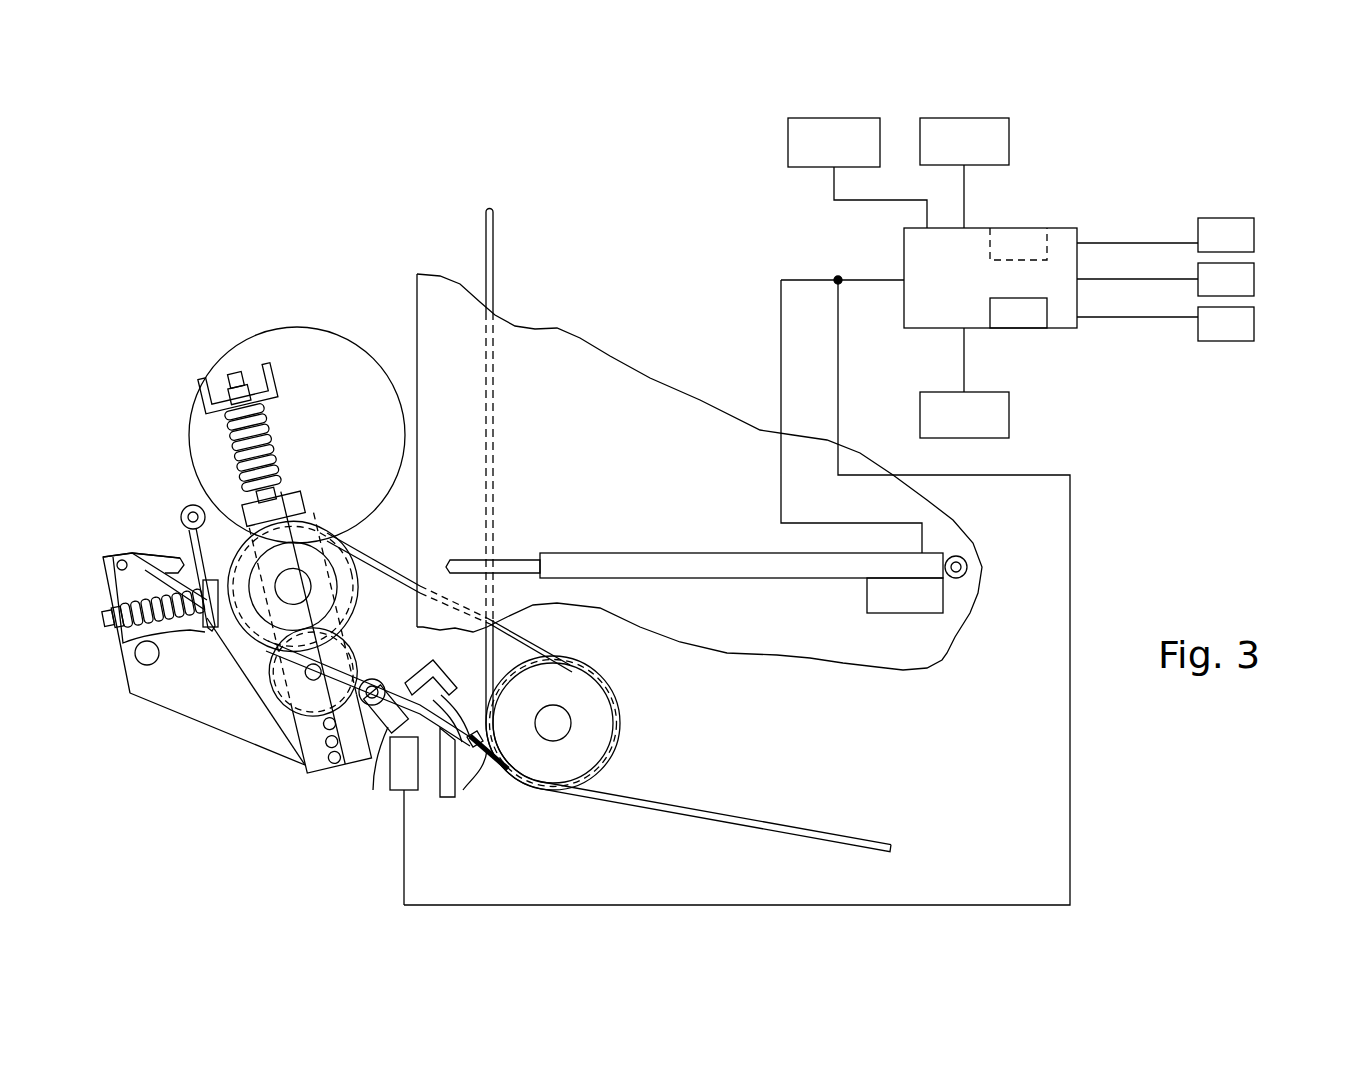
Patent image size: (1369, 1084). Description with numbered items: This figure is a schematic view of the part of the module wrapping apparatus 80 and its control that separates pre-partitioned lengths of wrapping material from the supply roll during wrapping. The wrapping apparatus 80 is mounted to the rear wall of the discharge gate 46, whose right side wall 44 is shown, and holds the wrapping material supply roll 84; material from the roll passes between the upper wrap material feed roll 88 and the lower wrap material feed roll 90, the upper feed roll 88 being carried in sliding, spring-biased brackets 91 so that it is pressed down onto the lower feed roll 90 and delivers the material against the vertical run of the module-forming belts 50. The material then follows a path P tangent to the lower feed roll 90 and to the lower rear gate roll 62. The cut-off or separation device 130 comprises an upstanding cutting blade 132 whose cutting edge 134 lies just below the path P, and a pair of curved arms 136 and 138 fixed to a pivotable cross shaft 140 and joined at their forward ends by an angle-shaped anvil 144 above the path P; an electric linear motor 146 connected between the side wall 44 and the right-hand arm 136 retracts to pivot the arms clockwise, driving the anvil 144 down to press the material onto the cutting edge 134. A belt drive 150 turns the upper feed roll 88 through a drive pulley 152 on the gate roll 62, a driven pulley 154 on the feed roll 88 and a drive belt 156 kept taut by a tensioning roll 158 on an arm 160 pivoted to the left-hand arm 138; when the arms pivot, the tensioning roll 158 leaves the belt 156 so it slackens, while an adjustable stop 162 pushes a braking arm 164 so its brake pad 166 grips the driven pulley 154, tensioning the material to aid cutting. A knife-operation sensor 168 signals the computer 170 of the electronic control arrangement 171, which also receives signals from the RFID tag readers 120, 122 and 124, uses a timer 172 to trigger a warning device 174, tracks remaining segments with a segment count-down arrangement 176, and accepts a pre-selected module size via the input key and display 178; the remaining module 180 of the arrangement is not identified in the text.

The right side wall 44 is at (614, 432).
The discharge gate 46 is at (412, 320).
The module-forming belts 50 is at (488, 236).
The lower rear gate roll 62 is at (593, 708).
The module wrapping apparatus 80 is at (336, 268).
The wrapping material supply roll 84 is at (246, 340).
The upper wrap material feed roll 88 is at (330, 540).
The lower wrap material feed roll 90 is at (278, 697).
The brackets 91 is at (283, 493).
The RFID tag reader 120 is at (1255, 232).
The RFID tag reader 122 is at (1255, 322).
The alternate RFID tag reader 124 is at (1255, 277).
The cut-off or separation device 130 is at (428, 802).
The cutting blade 132 is at (450, 797).
The cutting edge 134 is at (472, 742).
The right-hand curved arm 136 is at (143, 688).
The left-hand curved arm 138 is at (130, 557).
The cross shaft 140 is at (140, 656).
The anvil 144 is at (448, 793).
The electric linear motor 146 is at (700, 565).
The belt drive 150 is at (378, 538).
The drive pulley 152 is at (513, 663).
The driven pulley 154 is at (350, 618).
The drive belt 156 is at (450, 590).
The tensioning roll 158 is at (348, 762).
The arm 160 is at (390, 790).
The adjustable stop 162 is at (173, 580).
The braking arm 164 is at (213, 643).
The brake pad 166 is at (225, 640).
The knife-operation sensor 168 is at (392, 785).
The computer 170 is at (1062, 228).
The electronic control arrangement 171 is at (722, 160).
The timer 172 is at (1033, 317).
The warning device 174 is at (946, 426).
The segment count-down arrangement 176 is at (1018, 240).
The input key / display 178 is at (946, 152).
The module 180 is at (816, 153).
The path P is at (370, 652).